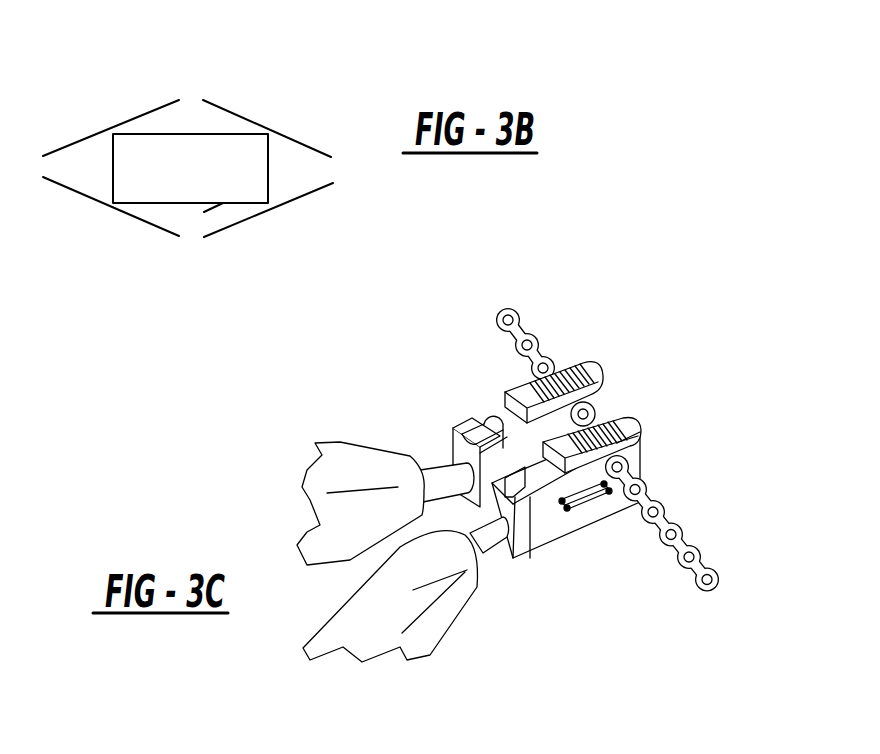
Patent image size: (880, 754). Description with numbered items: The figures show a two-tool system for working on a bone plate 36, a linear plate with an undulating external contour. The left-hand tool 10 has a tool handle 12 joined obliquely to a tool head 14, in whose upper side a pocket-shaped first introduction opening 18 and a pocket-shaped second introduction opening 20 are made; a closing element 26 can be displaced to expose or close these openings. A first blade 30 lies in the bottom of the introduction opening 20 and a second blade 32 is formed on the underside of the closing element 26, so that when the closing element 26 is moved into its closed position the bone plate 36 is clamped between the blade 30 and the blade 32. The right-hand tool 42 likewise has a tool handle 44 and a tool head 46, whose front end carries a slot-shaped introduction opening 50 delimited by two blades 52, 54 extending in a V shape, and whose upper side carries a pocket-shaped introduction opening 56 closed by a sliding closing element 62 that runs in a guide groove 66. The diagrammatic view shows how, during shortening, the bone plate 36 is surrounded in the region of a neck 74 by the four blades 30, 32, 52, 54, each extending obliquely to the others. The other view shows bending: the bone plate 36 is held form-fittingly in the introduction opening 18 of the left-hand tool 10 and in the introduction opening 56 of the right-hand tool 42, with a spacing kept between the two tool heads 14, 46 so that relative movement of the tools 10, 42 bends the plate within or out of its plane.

In FIG. 3C, the left-hand tool 10 is at (413, 430).
In FIG. 3C, the tool handle 12 is at (338, 475).
In FIG. 3C, the tool head 14 is at (450, 440).
In FIG. 3C, the first introduction opening 18 is at (600, 402).
In FIG. 3C, the second introduction opening 20 is at (480, 423).
In FIG. 3C, the closing element 26 is at (593, 367).
In FIG. 3B, the first blade 30 is at (67, 190).
In FIG. 3B, the second blade 32 is at (83, 138).
In FIG. 3B, the bone plate 36 is at (160, 152).
In FIG. 3C, the bone plate 36 is at (675, 517).
In FIG. 3C, the right-hand tool 42 is at (553, 588).
In FIG. 3C, the tool handle 44 is at (413, 590).
In FIG. 3C, the tool head 46 is at (543, 530).
In FIG. 3C, the introduction opening 50 is at (612, 497).
In FIG. 3B, the blade 52 is at (317, 190).
In FIG. 3B, the blade 54 is at (297, 142).
In FIG. 3C, the introduction opening 56 is at (638, 460).
In FIG. 3C, the closing element 62 is at (643, 418).
In FIG. 3C, the guide groove 66 is at (530, 548).
In FIG. 3B, the neck 74 is at (223, 203).